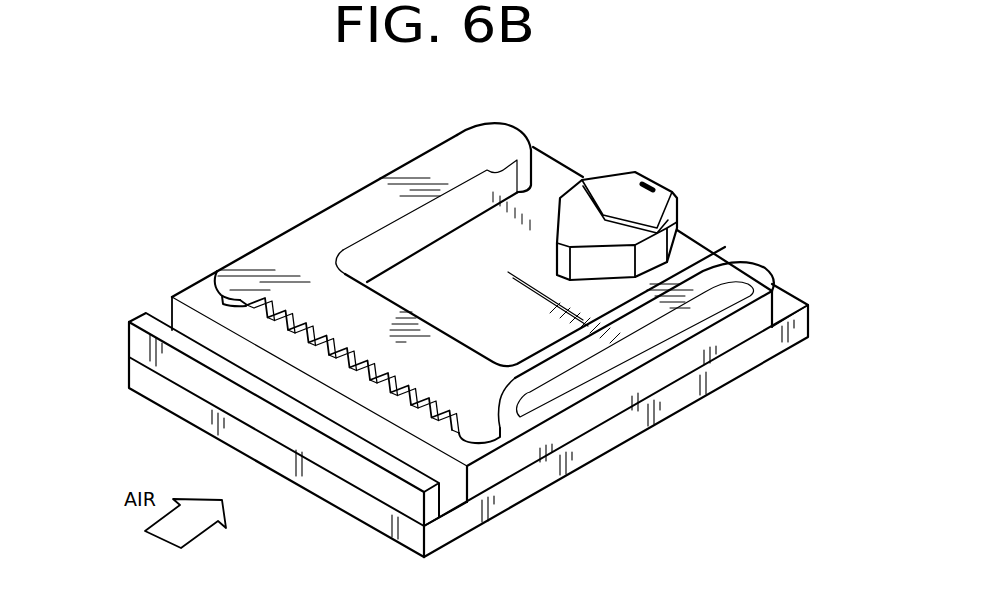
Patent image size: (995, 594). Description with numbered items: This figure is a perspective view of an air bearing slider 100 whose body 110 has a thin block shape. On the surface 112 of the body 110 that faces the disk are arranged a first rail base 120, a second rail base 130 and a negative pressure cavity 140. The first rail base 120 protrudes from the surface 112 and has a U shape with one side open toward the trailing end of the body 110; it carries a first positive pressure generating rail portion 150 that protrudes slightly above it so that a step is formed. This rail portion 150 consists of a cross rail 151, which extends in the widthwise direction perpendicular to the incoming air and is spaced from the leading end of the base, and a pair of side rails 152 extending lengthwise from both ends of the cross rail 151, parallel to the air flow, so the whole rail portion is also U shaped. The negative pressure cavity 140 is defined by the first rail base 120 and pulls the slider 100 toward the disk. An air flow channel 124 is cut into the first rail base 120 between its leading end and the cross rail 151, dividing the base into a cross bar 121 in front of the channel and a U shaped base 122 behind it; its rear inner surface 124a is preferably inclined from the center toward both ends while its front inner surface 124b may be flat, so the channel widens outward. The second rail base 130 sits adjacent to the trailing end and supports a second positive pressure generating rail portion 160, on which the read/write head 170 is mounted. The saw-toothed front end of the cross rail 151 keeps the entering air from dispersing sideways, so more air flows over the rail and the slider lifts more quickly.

The air bearing slider 100 is at (228, 240).
The body 110 is at (729, 378).
The surface of the body facing a disk 112 is at (786, 302).
The first rail base 120 is at (472, 340).
The cross bar 121 is at (437, 510).
The U shaped base 122 is at (498, 463).
The air flow channel 124 is at (246, 391).
The rear inner surface of the air flow channel 124a is at (171, 315).
The front inner surface of the air flow channel 124b is at (135, 344).
The second rail base 130 is at (664, 190).
The negative pressure cavity 140 is at (466, 306).
The first positive pressure generating rail portion 150 is at (494, 277).
The cross rail 151 is at (299, 286).
The side rails 152 is at (342, 226).
The second positive pressure generating rail portion 160 is at (601, 184).
The read/write head 170 is at (650, 180).